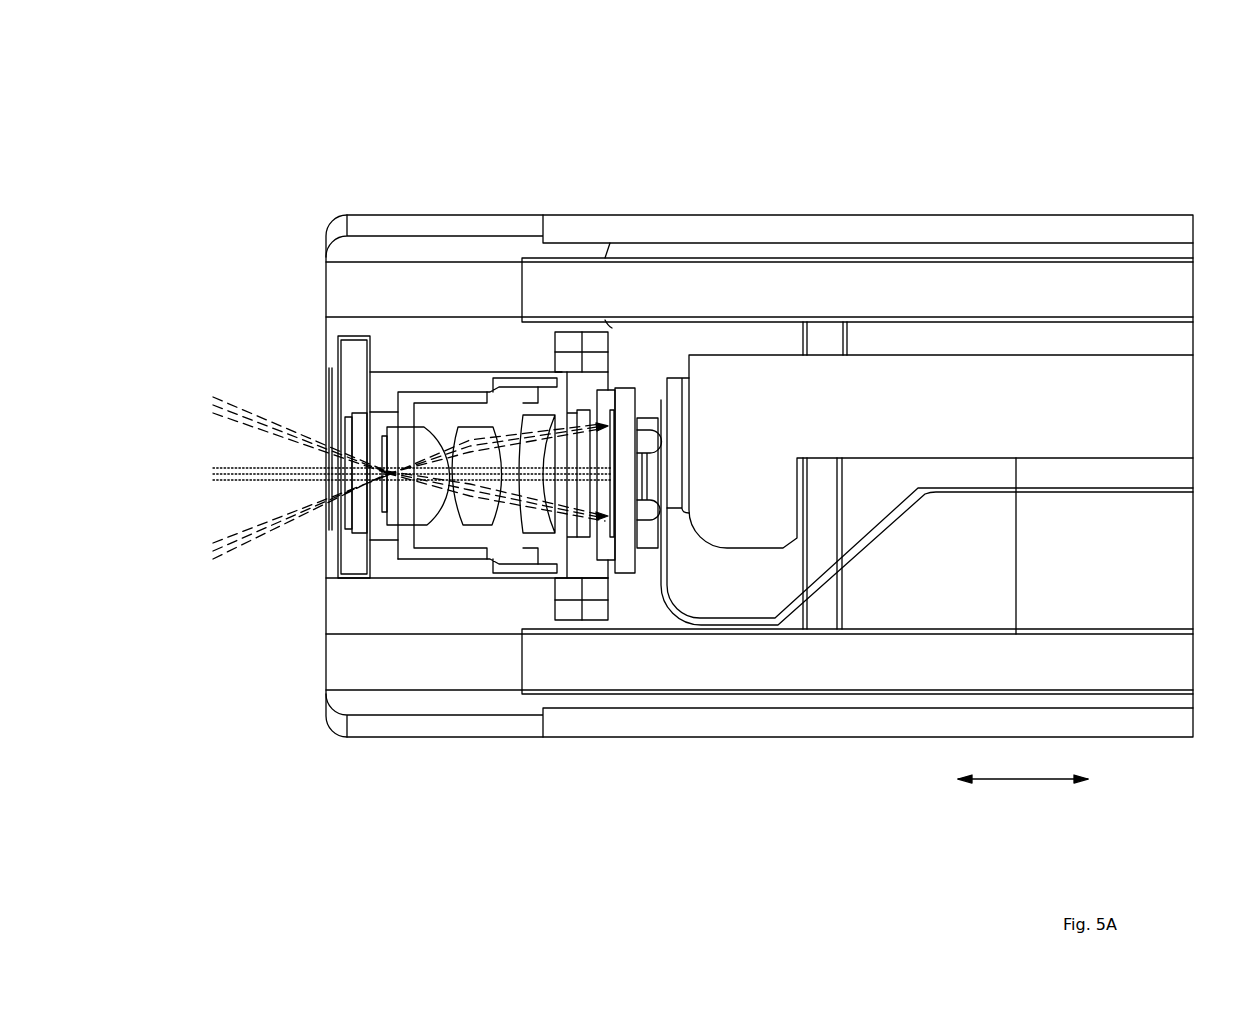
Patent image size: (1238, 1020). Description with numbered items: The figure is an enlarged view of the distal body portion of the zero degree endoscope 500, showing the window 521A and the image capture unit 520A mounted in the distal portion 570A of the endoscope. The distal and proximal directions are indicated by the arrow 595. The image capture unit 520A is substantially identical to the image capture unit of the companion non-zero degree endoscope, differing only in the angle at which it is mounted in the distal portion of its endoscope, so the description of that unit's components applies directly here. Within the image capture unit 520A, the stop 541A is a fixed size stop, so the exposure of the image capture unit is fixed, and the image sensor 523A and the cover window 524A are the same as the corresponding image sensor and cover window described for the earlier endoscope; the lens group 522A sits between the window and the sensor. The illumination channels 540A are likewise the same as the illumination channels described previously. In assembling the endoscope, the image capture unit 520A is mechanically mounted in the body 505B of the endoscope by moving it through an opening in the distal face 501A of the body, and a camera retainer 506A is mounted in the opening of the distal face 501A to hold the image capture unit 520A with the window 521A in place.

The zero degree endoscope 500 is at (865, 157).
The distal face 501A is at (325, 258).
The body 505B is at (442, 338).
The camera retainer 506A is at (337, 362).
The image capture unit 520A is at (421, 565).
The window 521A is at (353, 503).
The lens stack 522A is at (557, 773).
The image sensor 523A is at (620, 307).
The cover window 524A is at (575, 328).
The illumination channels 540A is at (1060, 664).
The stop 541A is at (387, 467).
The distal portion 570A is at (850, 832).
The arrow 595 is at (1022, 783).